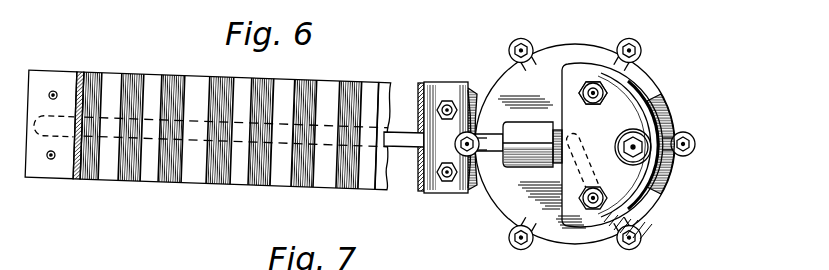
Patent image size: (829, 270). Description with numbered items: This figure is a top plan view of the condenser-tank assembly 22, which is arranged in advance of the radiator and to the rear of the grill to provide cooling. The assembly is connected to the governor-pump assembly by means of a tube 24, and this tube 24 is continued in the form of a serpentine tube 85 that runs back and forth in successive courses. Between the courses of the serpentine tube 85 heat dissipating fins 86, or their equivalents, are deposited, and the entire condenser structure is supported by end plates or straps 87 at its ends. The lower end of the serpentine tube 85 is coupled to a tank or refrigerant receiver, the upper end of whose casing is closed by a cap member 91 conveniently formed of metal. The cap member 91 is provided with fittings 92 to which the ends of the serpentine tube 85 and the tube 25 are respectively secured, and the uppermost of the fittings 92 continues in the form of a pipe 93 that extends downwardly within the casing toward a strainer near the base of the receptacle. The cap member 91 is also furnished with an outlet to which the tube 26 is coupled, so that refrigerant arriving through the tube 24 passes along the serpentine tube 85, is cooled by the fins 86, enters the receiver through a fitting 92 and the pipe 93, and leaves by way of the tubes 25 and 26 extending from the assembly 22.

The condenser-tank assembly 22 is at (104, 63).
The tube 24 is at (393, 158).
The tube 25 is at (597, 206).
The tube 26 is at (610, 91).
The serpentine tube 85 is at (67, 138).
The heat dissipating fins 86 is at (145, 178).
The end plates 87 is at (75, 82).
The cap member 91 is at (678, 160).
The fittings 92 is at (522, 165).
The pipe 93 is at (586, 146).